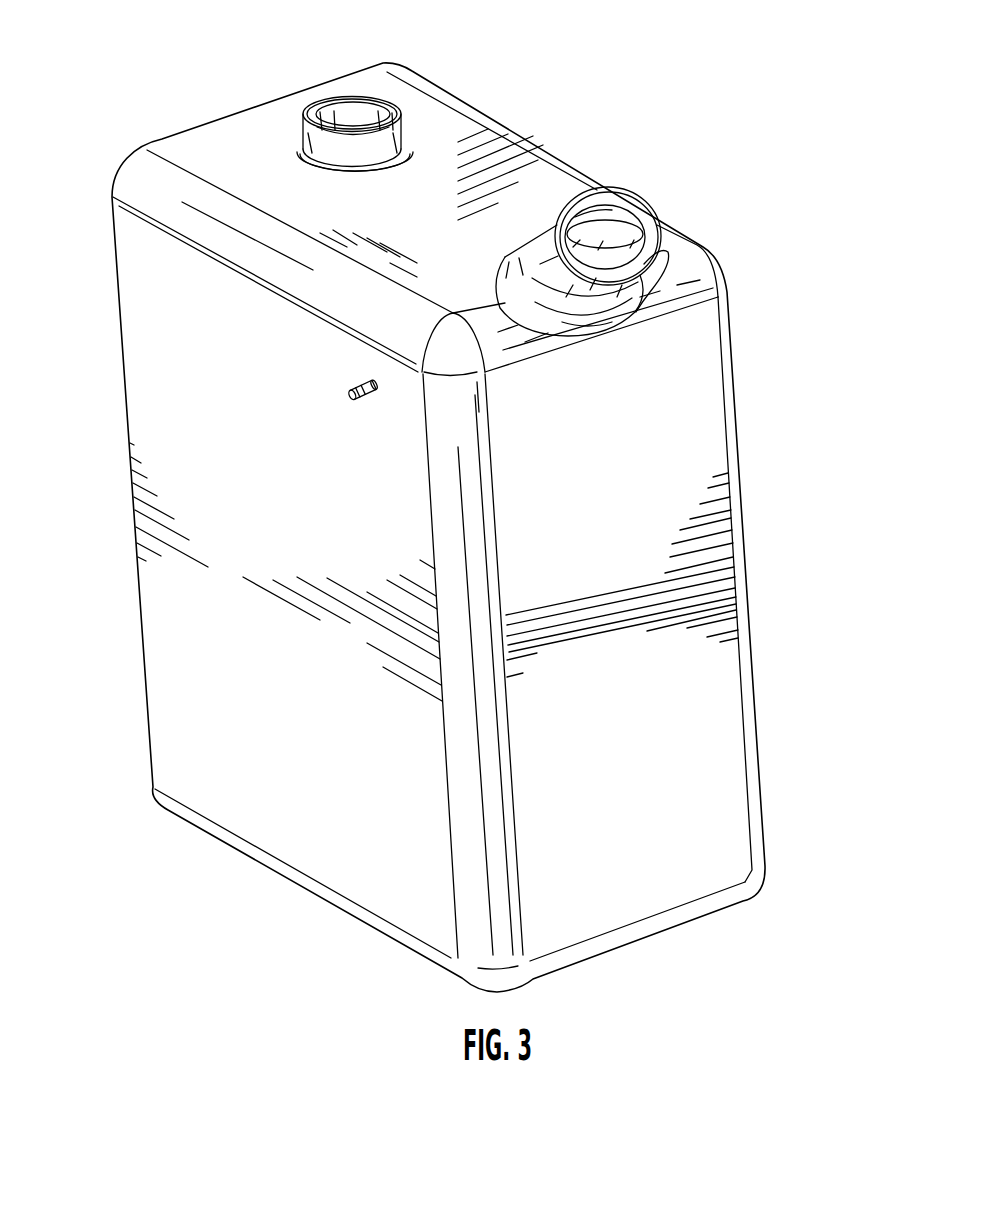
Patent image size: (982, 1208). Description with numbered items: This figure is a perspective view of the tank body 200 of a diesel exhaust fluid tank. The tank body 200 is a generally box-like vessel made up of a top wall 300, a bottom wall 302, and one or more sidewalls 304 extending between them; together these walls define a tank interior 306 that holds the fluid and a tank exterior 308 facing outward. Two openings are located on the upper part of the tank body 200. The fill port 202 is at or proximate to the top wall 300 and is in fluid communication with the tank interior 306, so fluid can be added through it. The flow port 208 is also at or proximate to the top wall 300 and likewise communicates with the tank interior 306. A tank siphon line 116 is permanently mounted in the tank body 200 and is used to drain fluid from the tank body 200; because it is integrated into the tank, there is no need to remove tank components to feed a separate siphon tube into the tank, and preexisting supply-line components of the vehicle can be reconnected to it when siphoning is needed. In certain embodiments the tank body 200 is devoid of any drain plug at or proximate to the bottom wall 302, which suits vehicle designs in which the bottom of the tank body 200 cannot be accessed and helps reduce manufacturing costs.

The tank body 200 is at (736, 366).
The top wall 300 is at (428, 120).
The flow port 208 is at (316, 108).
The fill port 202 is at (600, 192).
The sidewalls 304 is at (147, 320).
The tank exterior 308 is at (745, 582).
The tank interior 306 is at (710, 741).
The bottom wall 302 is at (347, 915).
The tank siphon line 116 is at (352, 388).